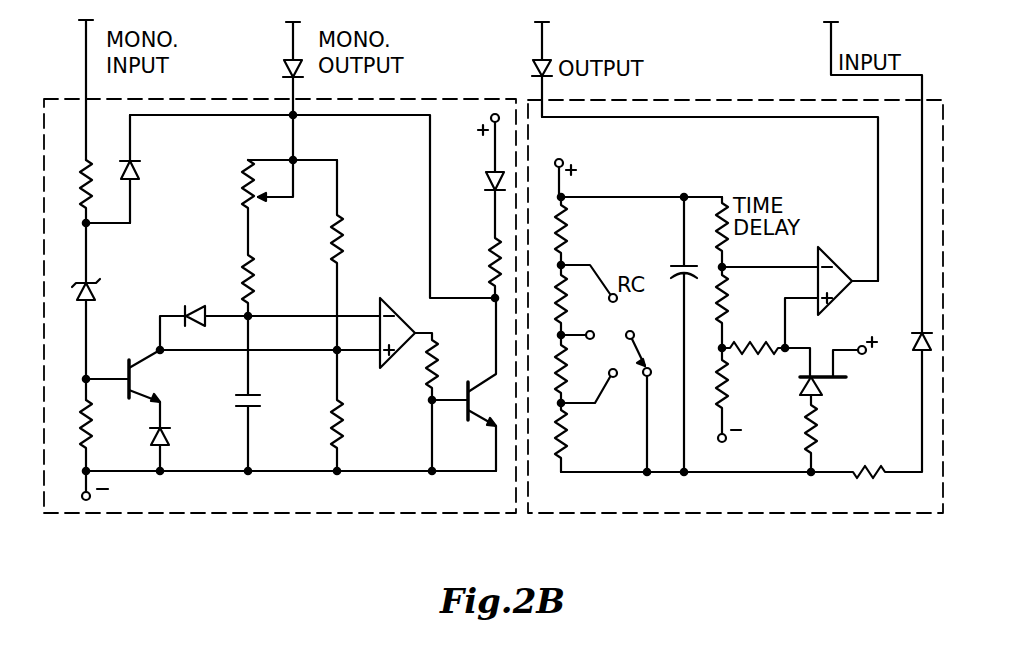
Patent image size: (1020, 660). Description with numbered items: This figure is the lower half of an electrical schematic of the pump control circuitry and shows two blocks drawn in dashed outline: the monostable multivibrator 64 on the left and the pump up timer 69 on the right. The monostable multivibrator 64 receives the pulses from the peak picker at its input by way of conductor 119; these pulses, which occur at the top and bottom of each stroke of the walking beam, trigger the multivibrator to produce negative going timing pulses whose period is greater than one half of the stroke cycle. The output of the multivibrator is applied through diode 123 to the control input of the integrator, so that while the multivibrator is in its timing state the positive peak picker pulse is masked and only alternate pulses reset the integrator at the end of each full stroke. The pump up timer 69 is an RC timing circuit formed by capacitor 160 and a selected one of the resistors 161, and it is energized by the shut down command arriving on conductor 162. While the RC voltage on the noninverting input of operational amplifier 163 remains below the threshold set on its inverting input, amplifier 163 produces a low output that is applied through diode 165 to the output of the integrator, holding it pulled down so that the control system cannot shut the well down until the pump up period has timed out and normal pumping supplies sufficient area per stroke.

The monostable multivibrator 64 is at (303, 514).
The pump up timer 69 is at (742, 514).
The conductor 119 is at (86, 72).
The diode 123 is at (290, 65).
The capacitor 160 is at (680, 264).
The resistors 161 is at (565, 259).
The conductor 162 is at (828, 33).
The operational amplifier 163 is at (836, 250).
The diode 165 is at (546, 56).